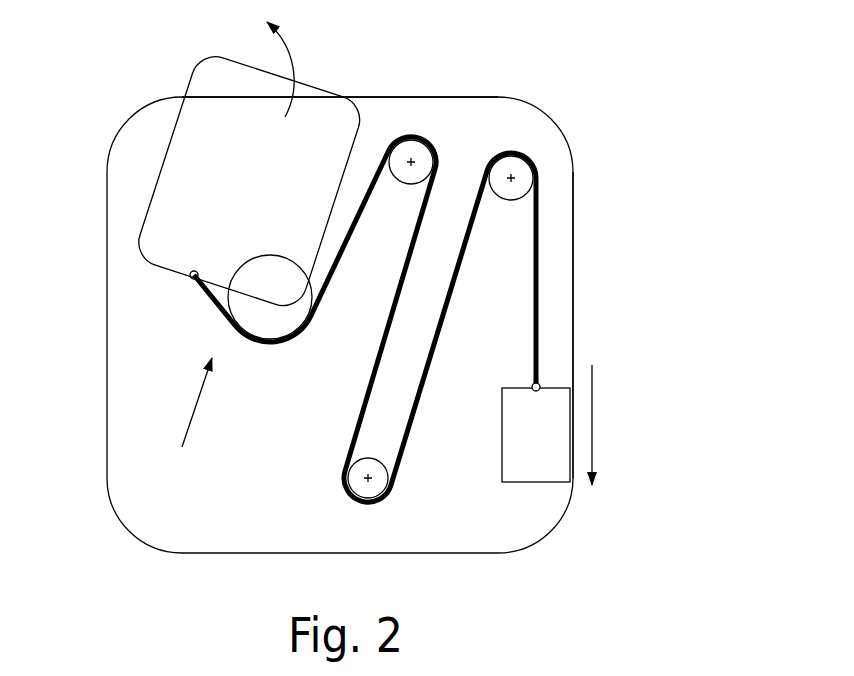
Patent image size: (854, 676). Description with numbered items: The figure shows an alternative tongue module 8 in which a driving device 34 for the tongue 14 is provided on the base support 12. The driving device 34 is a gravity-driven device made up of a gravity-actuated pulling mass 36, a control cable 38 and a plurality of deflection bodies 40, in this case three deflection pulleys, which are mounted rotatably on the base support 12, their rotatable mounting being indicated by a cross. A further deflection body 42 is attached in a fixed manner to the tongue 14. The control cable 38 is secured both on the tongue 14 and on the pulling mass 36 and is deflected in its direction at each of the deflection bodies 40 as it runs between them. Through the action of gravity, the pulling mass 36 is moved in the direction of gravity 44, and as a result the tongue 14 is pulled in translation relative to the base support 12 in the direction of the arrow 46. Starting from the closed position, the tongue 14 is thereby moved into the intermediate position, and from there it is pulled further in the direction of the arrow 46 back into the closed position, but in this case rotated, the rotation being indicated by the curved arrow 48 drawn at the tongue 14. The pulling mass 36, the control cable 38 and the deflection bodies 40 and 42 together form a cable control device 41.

The tongue module 8 is at (607, 110).
The base support 12 is at (105, 387).
The tongue 14 is at (197, 73).
The driving device 34 is at (602, 238).
The pulling mass 36 is at (533, 482).
The control cable 38 is at (370, 383).
The deflection bodies 40 is at (401, 181).
The cable control device 41 is at (493, 73).
The deflection body 42 is at (223, 295).
The direction of gravity 44 is at (593, 430).
The arrow 46 is at (192, 423).
The direction of rotation 48 is at (290, 60).